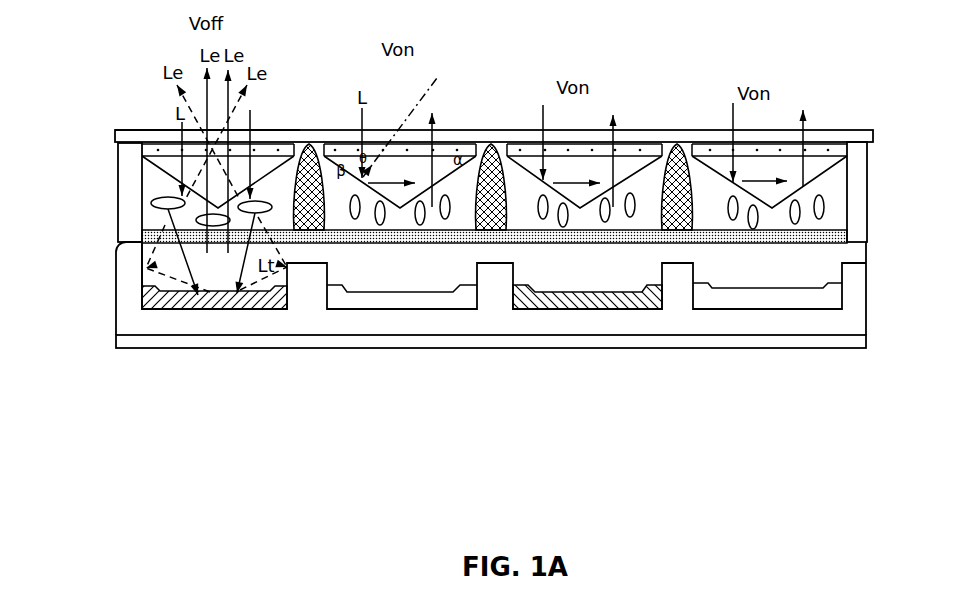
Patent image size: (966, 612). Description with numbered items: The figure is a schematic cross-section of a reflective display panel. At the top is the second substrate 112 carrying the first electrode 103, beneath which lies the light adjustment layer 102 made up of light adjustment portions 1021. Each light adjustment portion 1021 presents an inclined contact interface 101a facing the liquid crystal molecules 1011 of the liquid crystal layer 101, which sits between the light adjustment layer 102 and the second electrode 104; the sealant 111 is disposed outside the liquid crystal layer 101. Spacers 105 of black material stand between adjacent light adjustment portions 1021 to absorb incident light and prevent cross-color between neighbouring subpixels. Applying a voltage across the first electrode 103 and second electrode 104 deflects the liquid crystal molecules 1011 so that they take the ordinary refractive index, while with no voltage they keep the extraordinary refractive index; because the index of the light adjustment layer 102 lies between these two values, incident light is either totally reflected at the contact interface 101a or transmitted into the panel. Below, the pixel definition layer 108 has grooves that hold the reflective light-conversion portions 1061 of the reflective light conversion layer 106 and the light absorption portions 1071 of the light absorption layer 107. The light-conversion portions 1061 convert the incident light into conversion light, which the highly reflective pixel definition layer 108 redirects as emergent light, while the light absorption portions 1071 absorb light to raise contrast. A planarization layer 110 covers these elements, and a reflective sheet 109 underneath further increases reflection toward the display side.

The first electrode 103 is at (873, 138).
The second substrate 112 is at (137, 135).
The sealant 111 is at (857, 212).
The light adjustment portion 1021 is at (157, 157).
The light adjustment layer 102 is at (436, 153).
The spacer 105 is at (677, 145).
The contact interface 101a is at (838, 166).
The liquid crystal molecule 1011 is at (157, 207).
The liquid crystal layer 101 is at (427, 213).
The second electrode 104 is at (833, 237).
The pixel definition layer 108 is at (855, 287).
The planarization layer 110 is at (142, 265).
The reflective sheet 109 is at (857, 338).
The reflective light-conversion portion 1061 is at (180, 300).
The reflective light conversion layer 106 is at (402, 353).
The light absorption portion 1071 is at (777, 298).
The light absorption layer 107 is at (767, 352).